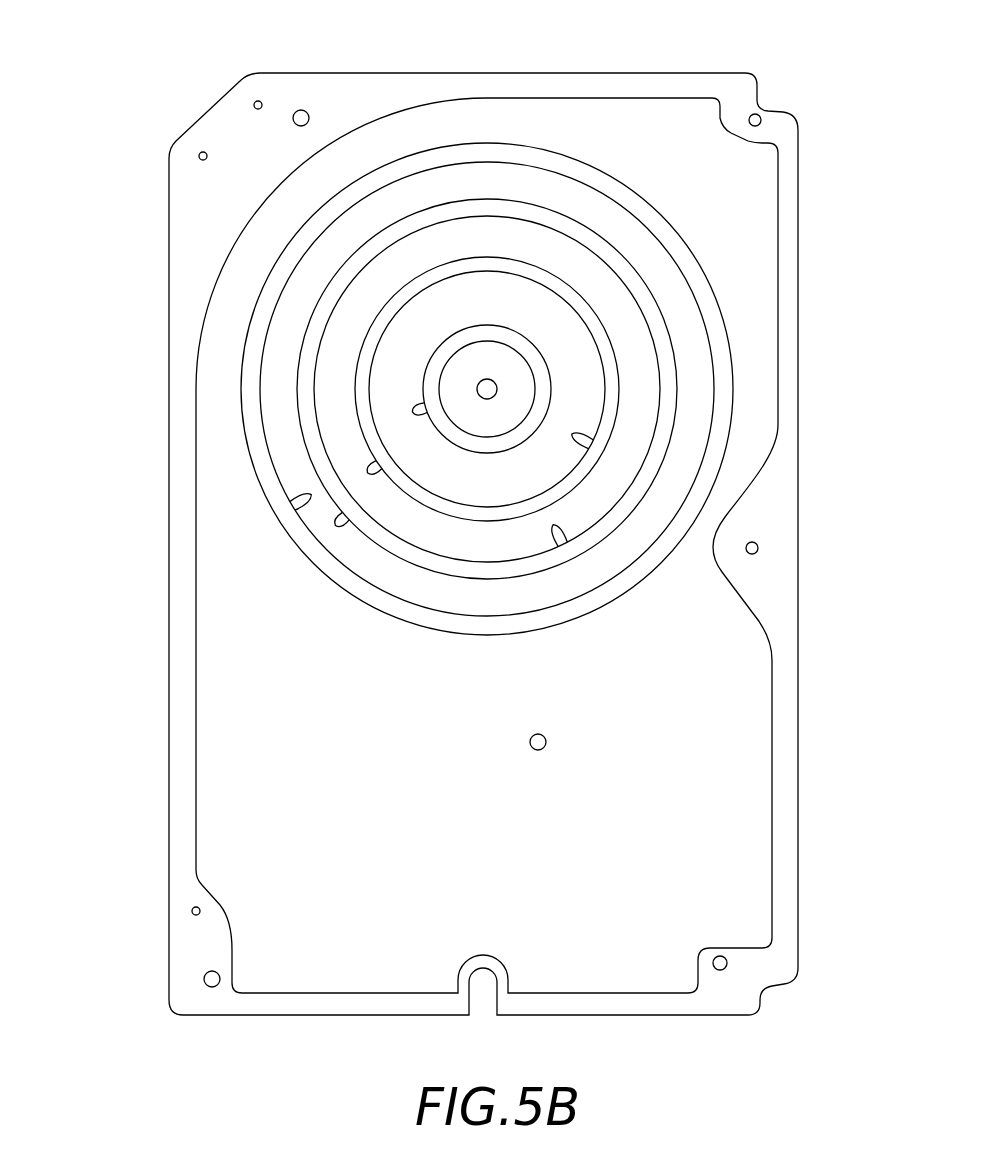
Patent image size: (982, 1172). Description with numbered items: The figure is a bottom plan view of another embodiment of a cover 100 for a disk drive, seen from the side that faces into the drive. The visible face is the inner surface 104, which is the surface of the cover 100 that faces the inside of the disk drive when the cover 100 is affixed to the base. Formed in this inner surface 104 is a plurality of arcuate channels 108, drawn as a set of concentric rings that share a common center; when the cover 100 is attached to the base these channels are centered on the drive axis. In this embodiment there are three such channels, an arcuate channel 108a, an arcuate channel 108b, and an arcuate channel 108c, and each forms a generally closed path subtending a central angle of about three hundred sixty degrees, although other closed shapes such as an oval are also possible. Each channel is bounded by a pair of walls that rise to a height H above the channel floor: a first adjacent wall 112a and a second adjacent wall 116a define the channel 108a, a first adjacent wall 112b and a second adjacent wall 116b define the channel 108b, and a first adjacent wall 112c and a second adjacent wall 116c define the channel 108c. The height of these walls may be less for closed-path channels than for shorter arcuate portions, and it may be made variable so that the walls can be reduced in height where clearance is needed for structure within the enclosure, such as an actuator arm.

The cover 100 is at (158, 729).
The inner surface 104 is at (735, 467).
The arcuate channels 108 is at (231, 399).
The arcuate channel 108a is at (686, 318).
The arcuate channel 108b is at (605, 292).
The arcuate channel 108c is at (508, 300).
The first adjacent wall 112a is at (346, 522).
The first adjacent wall 112b is at (378, 472).
The first adjacent wall 112c is at (418, 422).
The second adjacent wall 116a is at (303, 505).
The second adjacent wall 116b is at (560, 540).
The second adjacent wall 116c is at (578, 446).